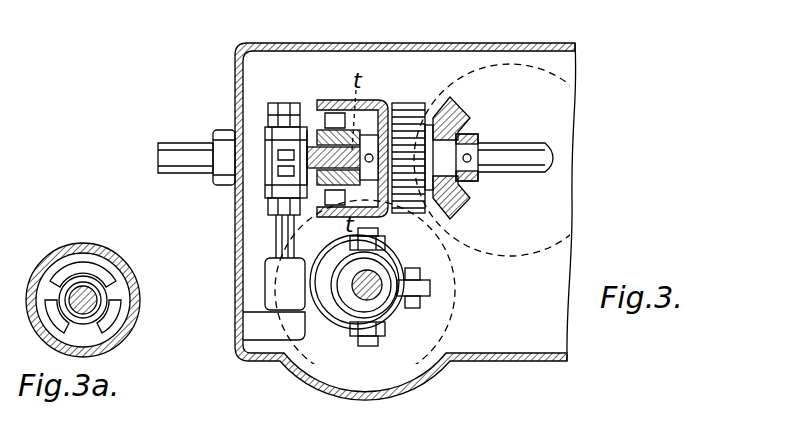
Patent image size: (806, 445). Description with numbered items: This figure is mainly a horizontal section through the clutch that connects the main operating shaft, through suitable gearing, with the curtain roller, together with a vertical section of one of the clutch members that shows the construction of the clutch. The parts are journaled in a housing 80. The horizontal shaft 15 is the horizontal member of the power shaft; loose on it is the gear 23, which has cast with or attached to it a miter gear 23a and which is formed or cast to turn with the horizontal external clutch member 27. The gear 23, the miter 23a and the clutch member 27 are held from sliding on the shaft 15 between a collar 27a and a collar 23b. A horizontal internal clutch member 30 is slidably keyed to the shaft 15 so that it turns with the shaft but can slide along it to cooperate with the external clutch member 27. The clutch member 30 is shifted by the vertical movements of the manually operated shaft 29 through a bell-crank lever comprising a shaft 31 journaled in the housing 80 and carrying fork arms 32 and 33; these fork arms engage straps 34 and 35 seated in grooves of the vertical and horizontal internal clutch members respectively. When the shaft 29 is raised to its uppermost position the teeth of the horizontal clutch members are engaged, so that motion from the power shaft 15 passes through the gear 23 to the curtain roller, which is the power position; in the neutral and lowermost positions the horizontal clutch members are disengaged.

In FIG. 3, the housing 80 is at (235, 75).
In FIG. 3, the strap 35 is at (268, 185).
In FIG. 3, the shaft 31 is at (280, 238).
In FIG. 3, the fork arm 32 is at (340, 330).
In FIG. 3, the horizontal external clutch member 27 is at (372, 100).
In FIG. 3A, the horizontal external clutch member 27 is at (85, 246).
In FIG. 3, the horizontal internal clutch member 30 is at (338, 103).
In FIG. 3A, the horizontal internal clutch member 30 is at (90, 264).
In FIG. 3, the shaft 15 is at (402, 103).
In FIG. 3A, the shaft 15 is at (92, 303).
In FIG. 3, the collar 27a is at (430, 103).
In FIG. 3, the gear 23 is at (425, 96).
In FIG. 3, the miter gear 23a is at (462, 114).
In FIG. 3, the collar 23b is at (490, 143).
In FIG. 3, the manually operated shaft 29 is at (368, 298).
In FIG. 3, the strap 34 is at (398, 318).
In FIG. 3, the fork arm 33 is at (292, 103).